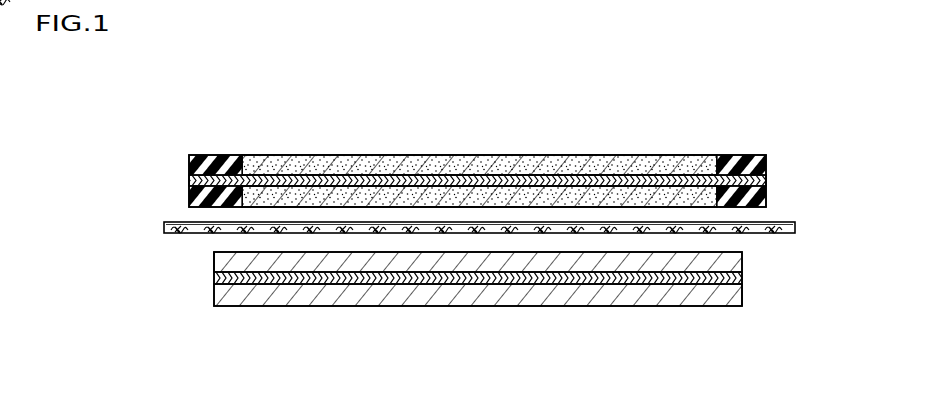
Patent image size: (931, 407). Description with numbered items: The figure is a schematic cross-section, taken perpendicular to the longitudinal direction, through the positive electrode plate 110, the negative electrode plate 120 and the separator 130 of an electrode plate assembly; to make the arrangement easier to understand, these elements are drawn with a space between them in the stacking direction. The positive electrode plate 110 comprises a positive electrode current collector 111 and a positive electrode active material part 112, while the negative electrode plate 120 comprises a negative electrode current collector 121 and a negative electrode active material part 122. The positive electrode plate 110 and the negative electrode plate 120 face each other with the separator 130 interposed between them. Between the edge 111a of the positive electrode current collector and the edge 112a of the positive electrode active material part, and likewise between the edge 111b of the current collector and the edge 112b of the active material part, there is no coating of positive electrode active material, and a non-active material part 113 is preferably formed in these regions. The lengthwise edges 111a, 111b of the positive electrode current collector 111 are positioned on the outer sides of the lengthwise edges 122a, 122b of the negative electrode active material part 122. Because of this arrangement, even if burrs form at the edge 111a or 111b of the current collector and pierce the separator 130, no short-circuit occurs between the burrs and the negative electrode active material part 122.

The positive electrode plate 110 is at (479, 144).
The positive electrode current collector 111 is at (479, 155).
The edge of the positive electrode current collector 111a is at (190, 180).
The edge of the positive electrode current collector 111b is at (768, 179).
The positive electrode active material part 112 is at (487, 152).
The edge of the positive electrode active material part 112a is at (232, 155).
The edge of the positive electrode active material part 112b is at (723, 158).
The non-active material part 113 is at (203, 156).
The negative electrode plate 120 is at (462, 312).
The negative electrode current collector 121 is at (400, 278).
The negative electrode active material part 122 is at (462, 305).
The lengthwise edge of the negative electrode active material part 122a is at (214, 259).
The lengthwise edge of the negative electrode active material part 122b is at (742, 263).
The separator 130 is at (778, 233).